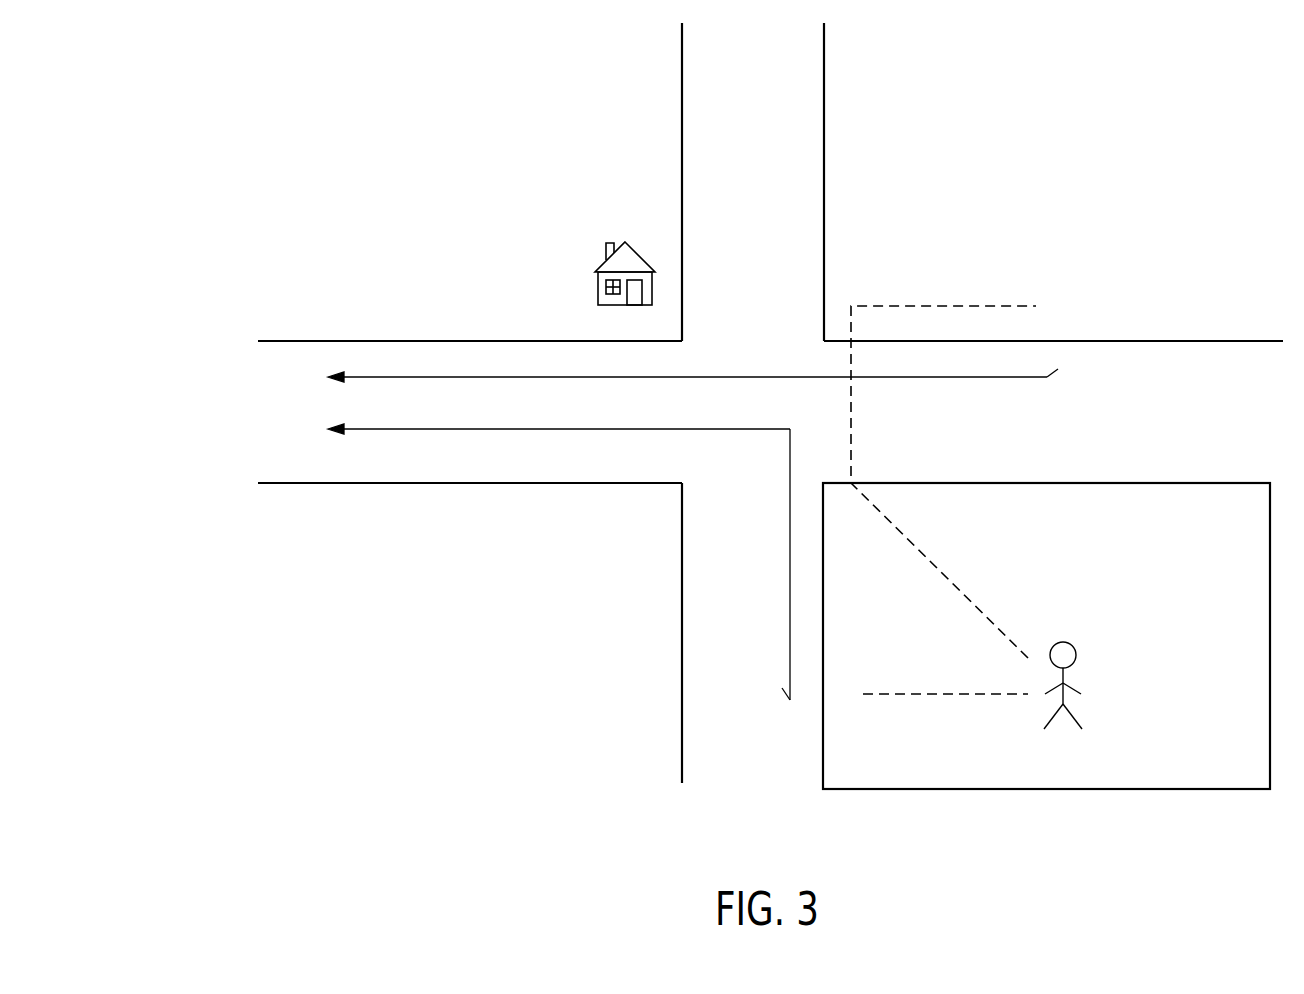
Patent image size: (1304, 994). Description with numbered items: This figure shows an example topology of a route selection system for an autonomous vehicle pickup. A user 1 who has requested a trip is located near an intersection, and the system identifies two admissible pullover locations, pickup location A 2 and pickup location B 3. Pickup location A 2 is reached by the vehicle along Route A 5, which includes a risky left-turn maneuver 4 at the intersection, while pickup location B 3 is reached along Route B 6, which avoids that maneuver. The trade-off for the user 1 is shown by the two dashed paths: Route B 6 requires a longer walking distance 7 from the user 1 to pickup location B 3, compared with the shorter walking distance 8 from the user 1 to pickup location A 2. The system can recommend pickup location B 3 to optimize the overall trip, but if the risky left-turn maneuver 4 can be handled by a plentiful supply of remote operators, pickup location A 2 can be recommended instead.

The user 1 is at (1082, 686).
The pullover location A 2 is at (841, 715).
The pullover location B 3 is at (1066, 291).
The risky left-turn maneuver 4 is at (771, 564).
The Route A 5 is at (471, 431).
The Route B 6 is at (605, 380).
The walking distance 7 is at (943, 482).
The walking distance 8 is at (945, 682).